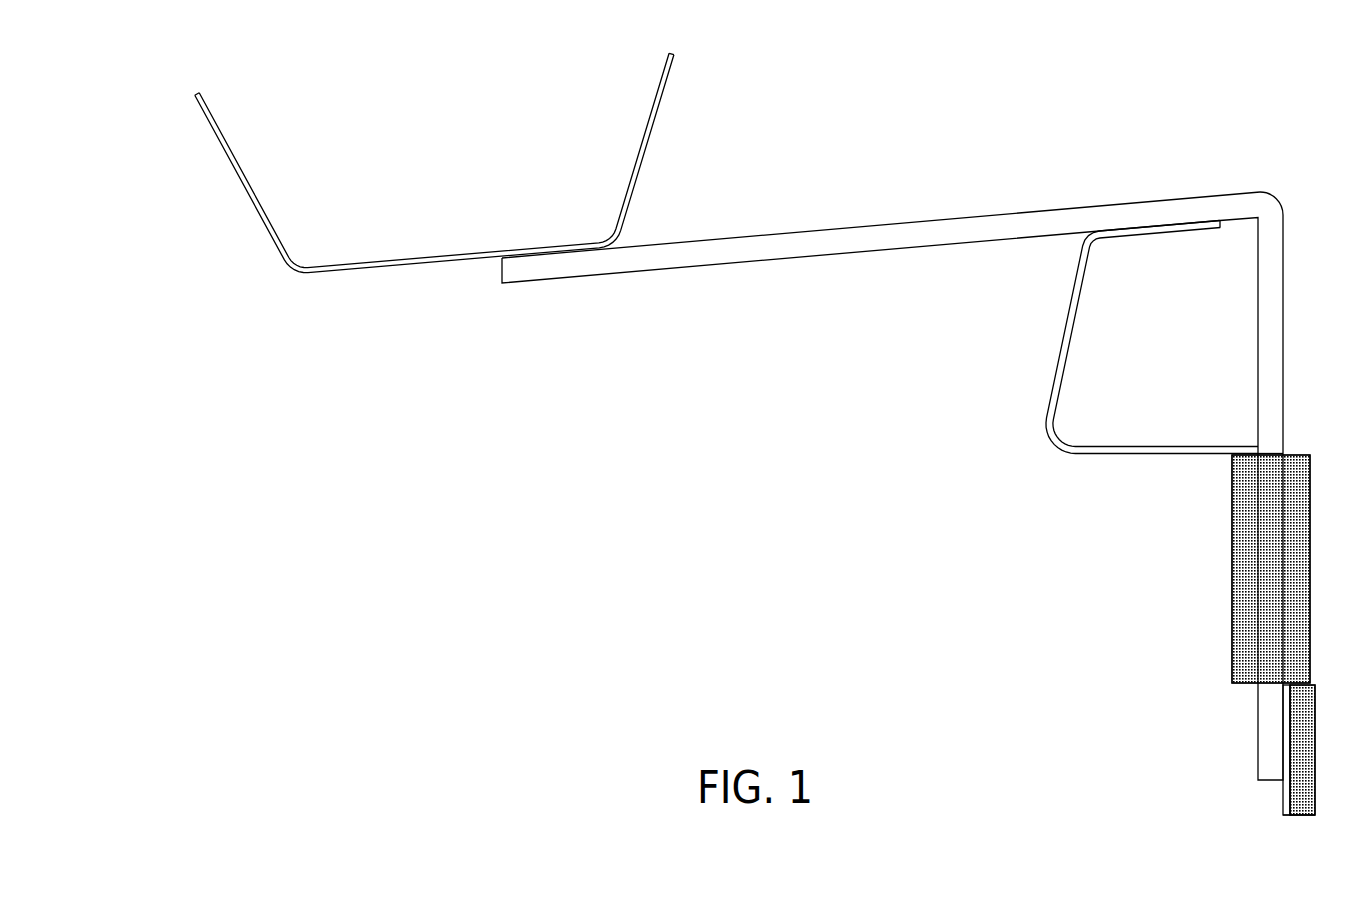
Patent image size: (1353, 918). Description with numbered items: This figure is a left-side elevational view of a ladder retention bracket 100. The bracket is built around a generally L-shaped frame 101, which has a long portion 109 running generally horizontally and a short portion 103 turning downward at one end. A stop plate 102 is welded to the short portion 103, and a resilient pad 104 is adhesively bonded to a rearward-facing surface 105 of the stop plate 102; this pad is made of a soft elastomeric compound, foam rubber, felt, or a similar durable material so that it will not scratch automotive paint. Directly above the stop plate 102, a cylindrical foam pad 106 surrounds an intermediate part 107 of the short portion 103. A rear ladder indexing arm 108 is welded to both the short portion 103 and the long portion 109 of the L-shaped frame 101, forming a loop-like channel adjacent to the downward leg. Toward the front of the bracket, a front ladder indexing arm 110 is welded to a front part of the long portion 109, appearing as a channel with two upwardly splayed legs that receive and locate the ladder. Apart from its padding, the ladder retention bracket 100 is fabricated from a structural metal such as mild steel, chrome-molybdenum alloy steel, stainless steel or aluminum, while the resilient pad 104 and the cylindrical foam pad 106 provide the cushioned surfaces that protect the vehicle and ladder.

The ladder retention bracket 100 is at (538, 365).
The L-shaped frame 101 is at (1229, 182).
The stop plate 102 is at (1283, 797).
The short portion 103 is at (1272, 347).
The resilient pad 104 is at (1301, 825).
The rearward-facing surface 105 is at (1282, 732).
The cylindrical foam pad 106 is at (1224, 574).
The intermediate part 107 is at (1268, 445).
The rear ladder indexing arm 108 is at (1060, 370).
The long portion 109 is at (937, 232).
The front ladder indexing arm 110 is at (412, 260).